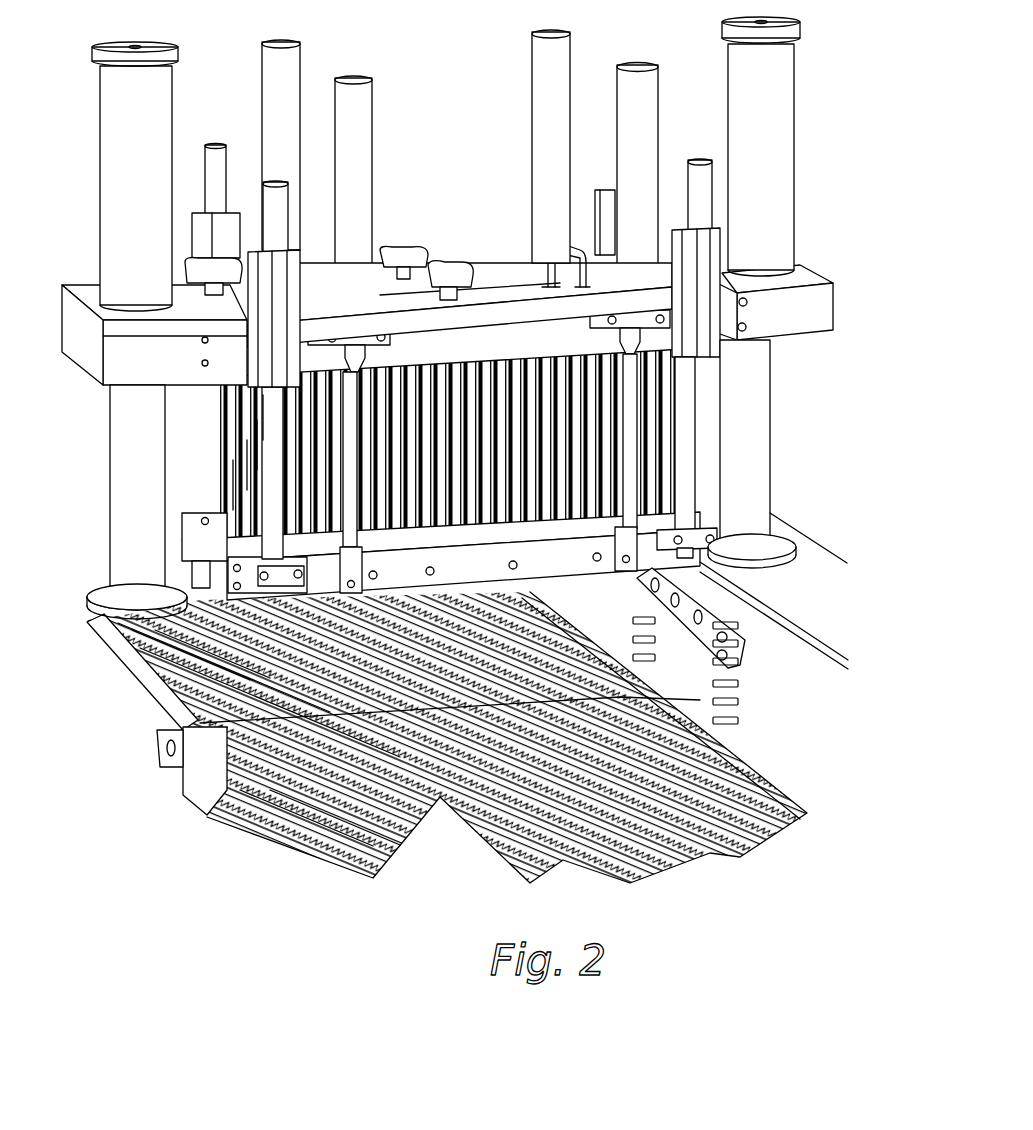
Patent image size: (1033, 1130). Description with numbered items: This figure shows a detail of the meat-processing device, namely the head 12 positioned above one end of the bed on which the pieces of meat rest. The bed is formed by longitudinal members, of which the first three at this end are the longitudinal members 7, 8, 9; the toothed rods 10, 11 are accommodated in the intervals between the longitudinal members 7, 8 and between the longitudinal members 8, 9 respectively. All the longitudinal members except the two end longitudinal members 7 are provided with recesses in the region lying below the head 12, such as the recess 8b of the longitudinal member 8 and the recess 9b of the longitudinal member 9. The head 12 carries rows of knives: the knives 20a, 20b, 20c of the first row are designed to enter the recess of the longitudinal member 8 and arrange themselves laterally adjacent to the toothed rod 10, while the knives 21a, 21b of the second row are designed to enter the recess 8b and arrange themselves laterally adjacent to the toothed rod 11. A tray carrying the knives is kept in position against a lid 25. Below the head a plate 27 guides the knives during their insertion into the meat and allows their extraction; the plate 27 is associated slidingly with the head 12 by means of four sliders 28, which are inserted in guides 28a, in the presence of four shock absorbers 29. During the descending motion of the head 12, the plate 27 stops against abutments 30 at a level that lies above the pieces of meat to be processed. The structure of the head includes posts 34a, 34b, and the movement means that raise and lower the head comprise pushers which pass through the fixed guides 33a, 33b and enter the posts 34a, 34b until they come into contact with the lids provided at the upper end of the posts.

The longitudinal member 7 is at (110, 634).
The longitudinal member 8 is at (133, 632).
The recess 8b is at (263, 793).
The longitudinal member 9 is at (153, 630).
The recess 9b is at (283, 787).
The toothed rod 10 is at (147, 663).
The toothed rod 11 is at (187, 680).
The head 12 is at (477, 263).
The knife 20a is at (247, 460).
The knife 20b is at (233, 477).
The knife 20c is at (200, 497).
The knife 21a is at (263, 417).
The knife 21b is at (257, 440).
The lid 25 is at (497, 277).
The plate 27 is at (592, 586).
The slider 28 is at (277, 200).
The guide 28a is at (267, 320).
The shock absorber 29 is at (365, 127).
The abutment 30 is at (700, 620).
The fixed guide 33a is at (125, 430).
The fixed guide 33b is at (762, 438).
The post 34a is at (117, 175).
The post 34b is at (780, 125).